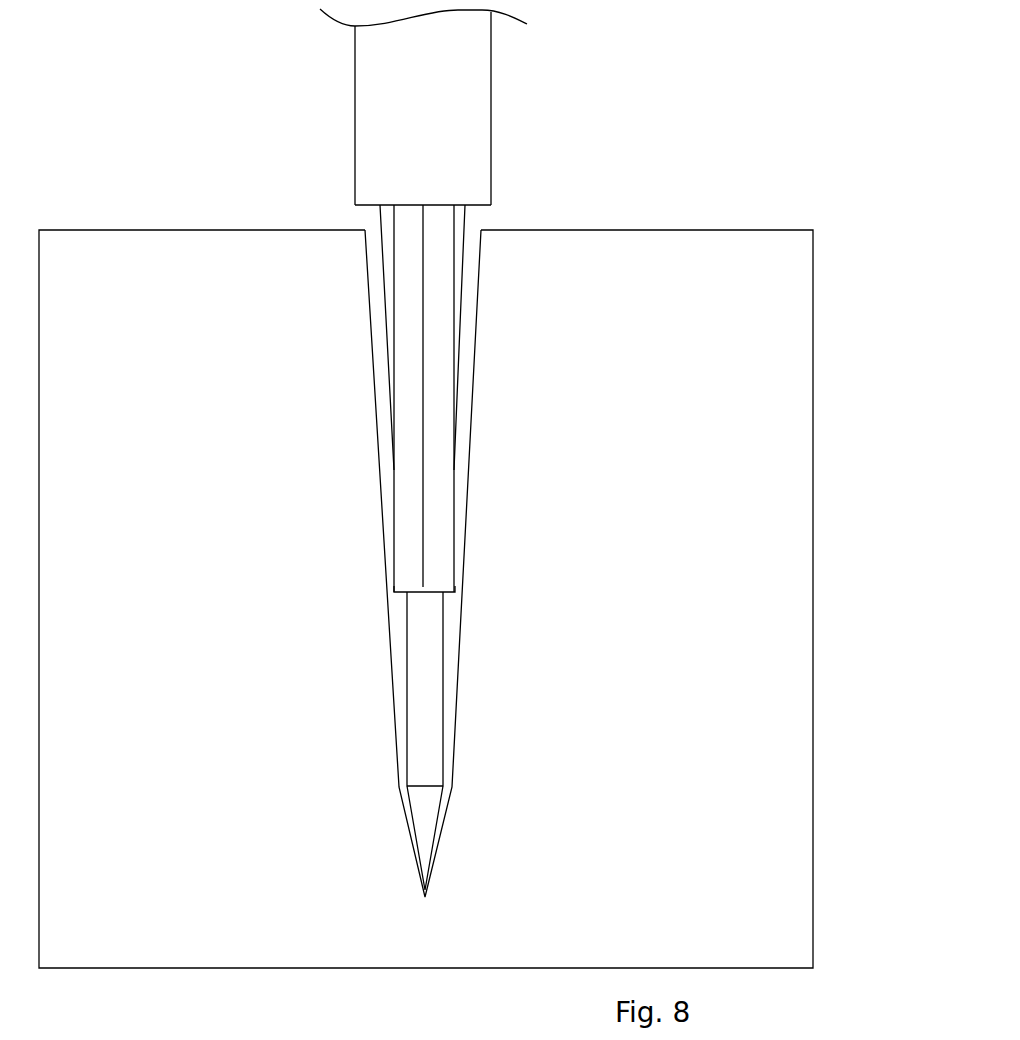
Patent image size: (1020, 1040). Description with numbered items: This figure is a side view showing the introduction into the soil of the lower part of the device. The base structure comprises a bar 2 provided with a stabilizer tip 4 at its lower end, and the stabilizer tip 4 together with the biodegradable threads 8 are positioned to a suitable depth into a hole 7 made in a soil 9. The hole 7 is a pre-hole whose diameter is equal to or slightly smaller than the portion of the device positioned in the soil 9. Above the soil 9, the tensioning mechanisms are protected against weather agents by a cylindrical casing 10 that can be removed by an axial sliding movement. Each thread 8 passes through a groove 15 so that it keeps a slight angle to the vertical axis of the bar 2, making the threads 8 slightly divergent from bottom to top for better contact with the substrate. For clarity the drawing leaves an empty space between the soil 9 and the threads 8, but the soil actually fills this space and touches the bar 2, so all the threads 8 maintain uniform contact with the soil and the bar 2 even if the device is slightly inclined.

The bar 2 is at (444, 348).
The stabilizer tip 4 is at (425, 740).
The hole 7 is at (375, 272).
The biodegradable threads 8 is at (465, 240).
The soil 9 is at (202, 474).
The cylindrical casing 10 is at (417, 108).
The groove 15 is at (398, 592).